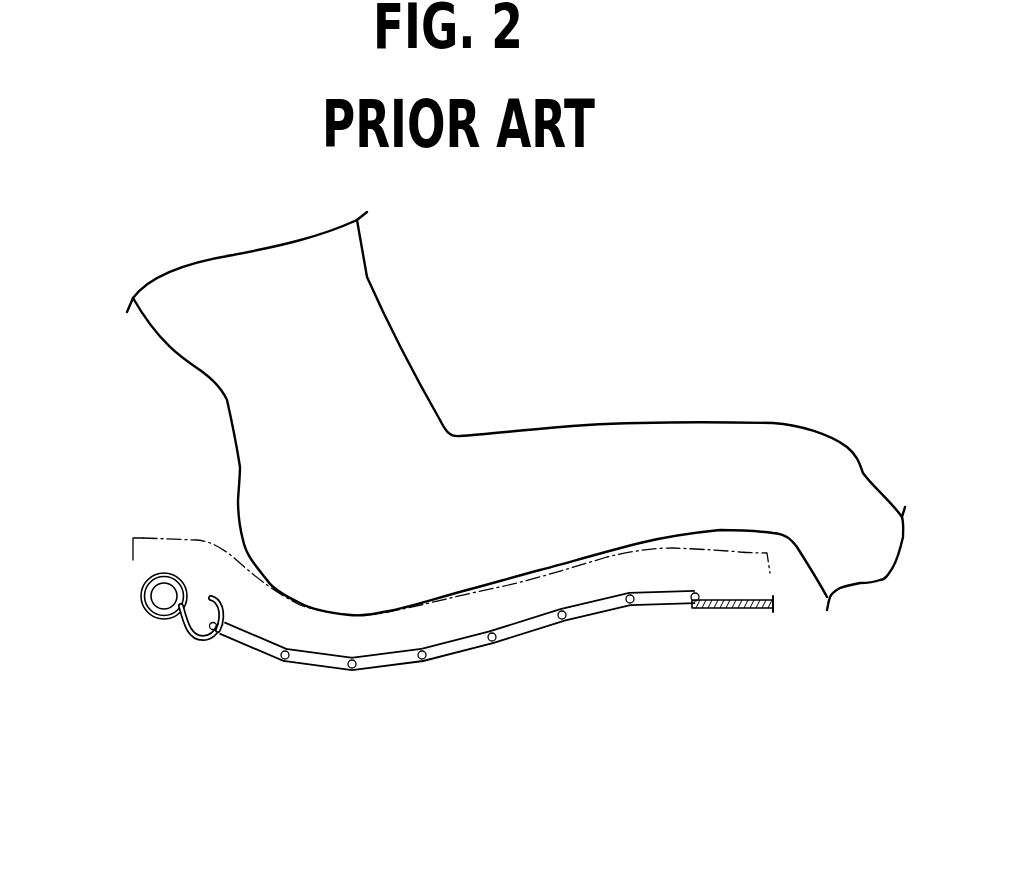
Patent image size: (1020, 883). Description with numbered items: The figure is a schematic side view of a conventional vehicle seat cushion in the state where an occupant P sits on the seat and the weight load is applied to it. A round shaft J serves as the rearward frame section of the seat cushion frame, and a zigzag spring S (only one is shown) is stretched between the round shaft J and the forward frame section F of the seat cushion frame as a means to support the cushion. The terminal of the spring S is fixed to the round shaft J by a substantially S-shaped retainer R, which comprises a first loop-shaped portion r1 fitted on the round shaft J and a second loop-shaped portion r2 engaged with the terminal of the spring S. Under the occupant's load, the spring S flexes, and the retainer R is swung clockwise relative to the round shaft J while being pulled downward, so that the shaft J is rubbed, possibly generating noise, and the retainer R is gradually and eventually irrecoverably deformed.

The passenger (seated occupant) P is at (585, 424).
The zigzag spring S is at (460, 650).
The forward frame section F is at (742, 609).
The retainer R is at (144, 608).
The first loop-shaped portion r1 is at (141, 597).
The second loop-shaped portion r2 is at (203, 641).
The round shaft J is at (165, 619).